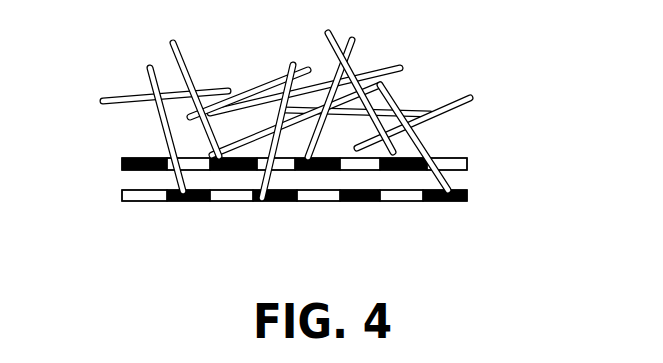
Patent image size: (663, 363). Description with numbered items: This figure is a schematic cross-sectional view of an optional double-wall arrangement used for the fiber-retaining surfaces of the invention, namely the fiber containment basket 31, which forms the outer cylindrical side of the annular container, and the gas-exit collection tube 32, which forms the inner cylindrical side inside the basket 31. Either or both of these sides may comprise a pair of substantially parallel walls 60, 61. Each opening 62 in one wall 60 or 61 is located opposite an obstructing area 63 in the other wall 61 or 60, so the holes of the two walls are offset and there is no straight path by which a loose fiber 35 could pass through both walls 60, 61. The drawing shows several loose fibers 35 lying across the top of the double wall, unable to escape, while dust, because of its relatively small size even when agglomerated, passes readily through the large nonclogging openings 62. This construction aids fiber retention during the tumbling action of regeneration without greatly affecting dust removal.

The basket 31 is at (321, 195).
The gas-exit collection tube 32 is at (321, 195).
The fiber 35 is at (149, 73).
The wall 60 is at (121, 162).
The wall 61 is at (121, 196).
The opening 62 is at (350, 167).
The obstructing area 63 is at (229, 170).